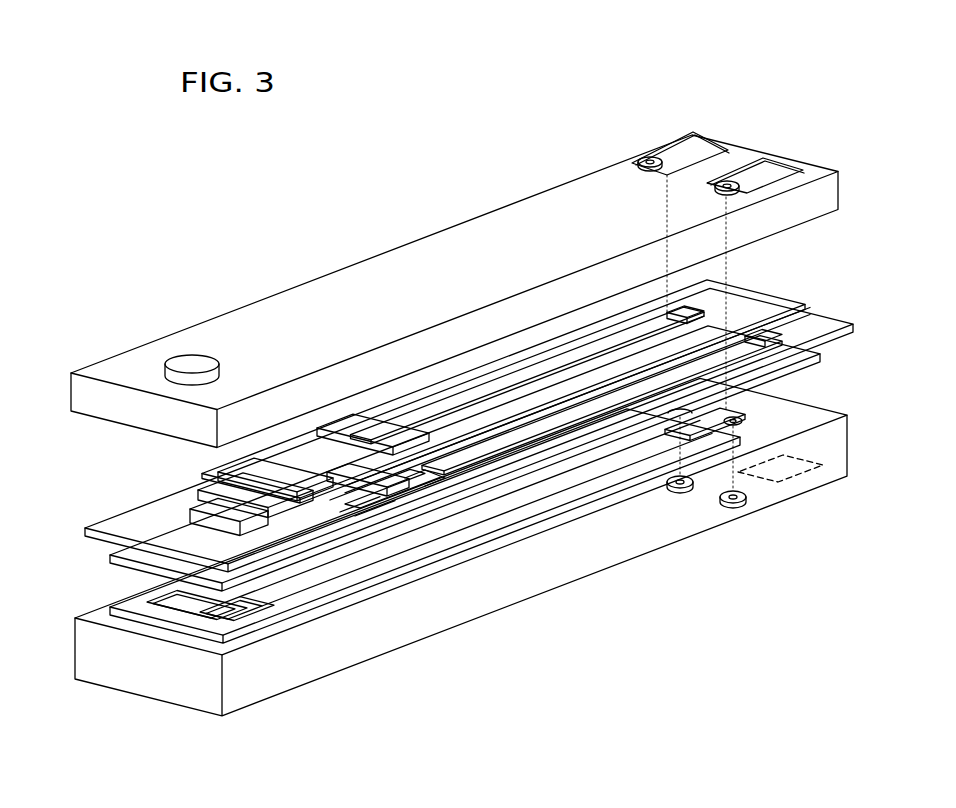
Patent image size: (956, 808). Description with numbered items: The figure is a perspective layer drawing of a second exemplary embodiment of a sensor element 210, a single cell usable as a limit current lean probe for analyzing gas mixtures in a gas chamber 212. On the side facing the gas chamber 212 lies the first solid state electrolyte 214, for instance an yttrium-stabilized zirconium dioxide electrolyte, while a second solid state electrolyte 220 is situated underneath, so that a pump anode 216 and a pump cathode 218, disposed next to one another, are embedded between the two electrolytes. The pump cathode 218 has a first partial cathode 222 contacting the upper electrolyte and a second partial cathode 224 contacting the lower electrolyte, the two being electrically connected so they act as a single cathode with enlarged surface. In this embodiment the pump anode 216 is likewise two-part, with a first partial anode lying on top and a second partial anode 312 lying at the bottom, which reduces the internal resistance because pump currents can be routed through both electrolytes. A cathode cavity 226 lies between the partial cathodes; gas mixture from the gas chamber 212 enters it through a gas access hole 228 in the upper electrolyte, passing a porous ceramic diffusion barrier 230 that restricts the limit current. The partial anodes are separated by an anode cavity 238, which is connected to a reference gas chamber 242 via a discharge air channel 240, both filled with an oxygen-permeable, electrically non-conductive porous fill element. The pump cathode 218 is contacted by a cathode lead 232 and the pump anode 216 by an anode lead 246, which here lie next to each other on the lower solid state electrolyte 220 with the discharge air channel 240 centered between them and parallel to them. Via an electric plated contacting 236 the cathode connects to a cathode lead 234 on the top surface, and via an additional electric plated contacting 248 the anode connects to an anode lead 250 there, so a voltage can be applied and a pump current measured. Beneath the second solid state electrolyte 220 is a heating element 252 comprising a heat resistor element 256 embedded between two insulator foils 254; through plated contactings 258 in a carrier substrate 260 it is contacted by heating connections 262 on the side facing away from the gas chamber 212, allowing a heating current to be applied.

The sensor element 210 is at (444, 192).
The gas chamber 212 is at (195, 250).
The first solid state electrolyte 214 is at (128, 360).
The pump anode 216 is at (342, 427).
The pump cathode 218 is at (198, 469).
The second solid state electrolyte 220 is at (132, 527).
The first partial cathode 222 is at (373, 480).
The second partial cathode 224 is at (345, 520).
The cathode cavity 226 is at (350, 503).
The gas access hole 228 is at (212, 355).
The diffusion barrier 230 is at (203, 511).
The cathode lead 232 is at (473, 393).
The cathode lead 234 is at (773, 170).
The electric plated contacting 236 is at (728, 262).
The anode cavity 238 is at (372, 460).
The discharge air channel 240 is at (585, 375).
The reference gas chamber 242 is at (866, 297).
The anode lead 246 is at (735, 350).
The electric plated contacting 248 is at (664, 205).
The anode lead 250 is at (700, 147).
The heating element 252 is at (128, 581).
The insulator foil 254 is at (110, 551).
The heat resistor element 256 is at (245, 612).
The plated contacting 258 is at (760, 480).
The carrier substrate 260 is at (180, 690).
The heating connection 262 is at (703, 467).
The second partial anode 312 is at (427, 490).